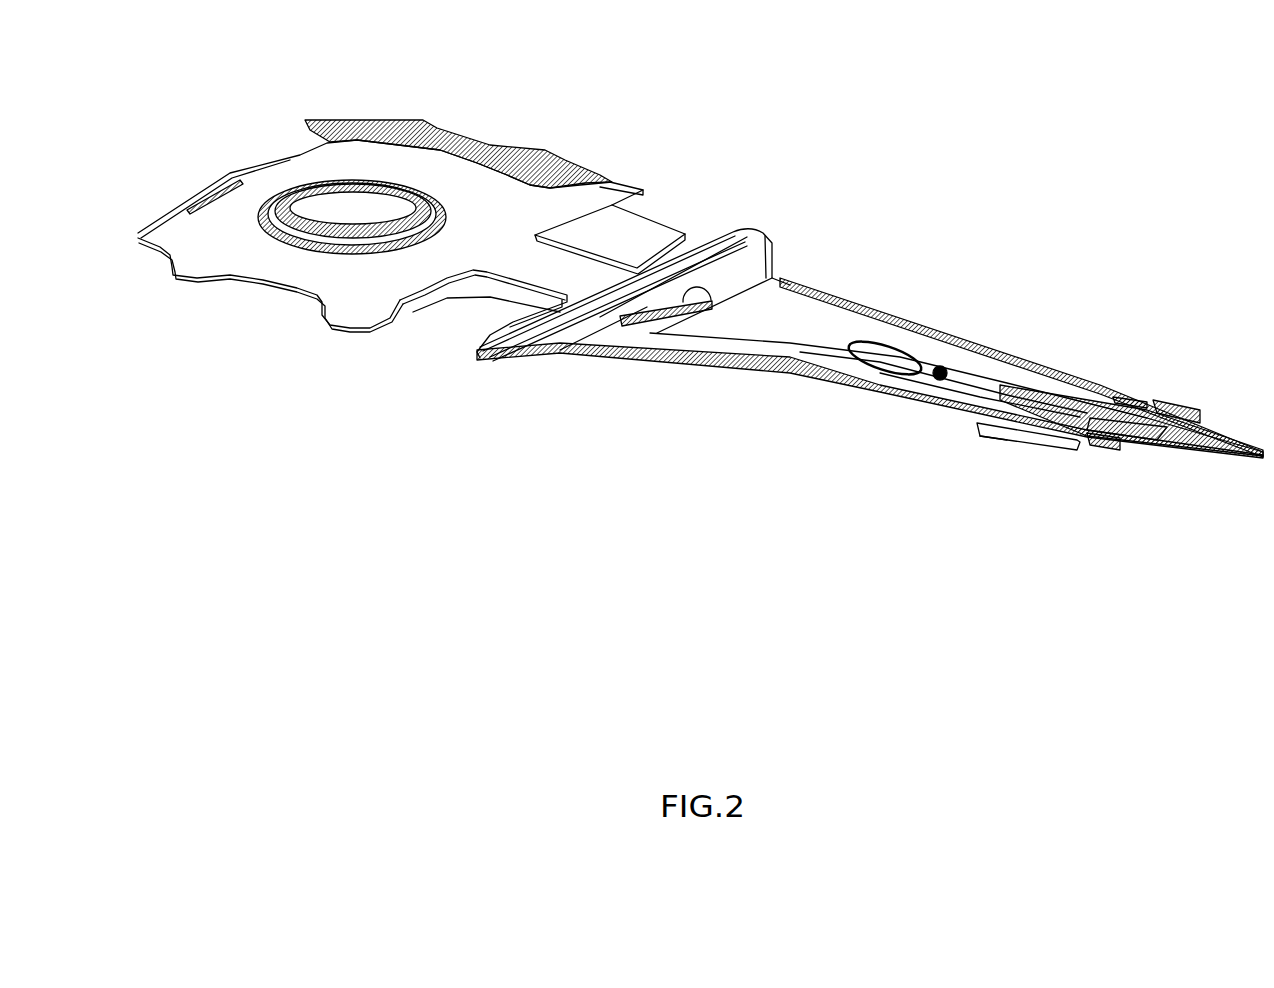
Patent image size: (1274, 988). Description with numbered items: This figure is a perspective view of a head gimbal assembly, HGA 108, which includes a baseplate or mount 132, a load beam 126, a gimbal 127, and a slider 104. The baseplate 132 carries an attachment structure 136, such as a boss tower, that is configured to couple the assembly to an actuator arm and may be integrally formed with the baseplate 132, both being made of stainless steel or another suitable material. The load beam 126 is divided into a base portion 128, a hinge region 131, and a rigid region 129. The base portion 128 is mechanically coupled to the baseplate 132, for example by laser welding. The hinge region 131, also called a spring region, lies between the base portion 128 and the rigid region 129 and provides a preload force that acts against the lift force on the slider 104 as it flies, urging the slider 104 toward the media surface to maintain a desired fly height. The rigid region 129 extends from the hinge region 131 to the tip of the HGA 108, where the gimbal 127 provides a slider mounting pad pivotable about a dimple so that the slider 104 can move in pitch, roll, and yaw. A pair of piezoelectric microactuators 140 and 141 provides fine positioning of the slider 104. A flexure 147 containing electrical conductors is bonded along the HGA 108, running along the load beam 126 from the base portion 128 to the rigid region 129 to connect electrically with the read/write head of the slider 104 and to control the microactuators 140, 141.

The slider 104 is at (1060, 450).
The head gimbal assembly 108 is at (930, 212).
The load beam 126 is at (973, 373).
The gimbal 127 is at (1007, 440).
The base portion 128 is at (581, 343).
The rigid region 129 is at (900, 343).
The hinge region 131 is at (778, 285).
The baseplate 132 is at (610, 183).
The attachment structure 136 is at (297, 180).
The microactuator 140 is at (490, 296).
The microactuator 141 is at (647, 243).
The flexure 147 is at (490, 140).